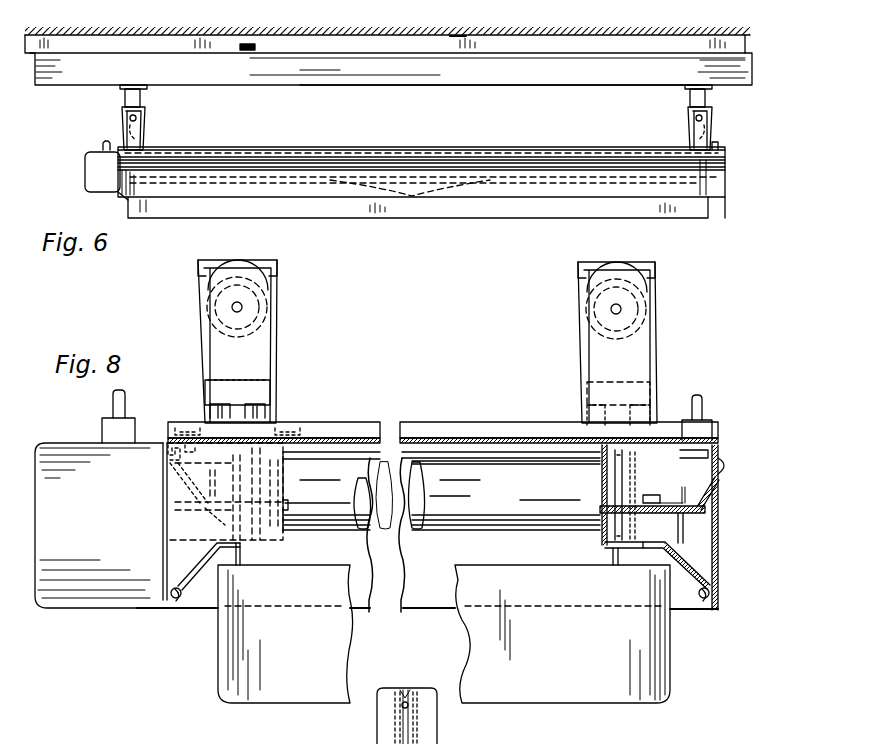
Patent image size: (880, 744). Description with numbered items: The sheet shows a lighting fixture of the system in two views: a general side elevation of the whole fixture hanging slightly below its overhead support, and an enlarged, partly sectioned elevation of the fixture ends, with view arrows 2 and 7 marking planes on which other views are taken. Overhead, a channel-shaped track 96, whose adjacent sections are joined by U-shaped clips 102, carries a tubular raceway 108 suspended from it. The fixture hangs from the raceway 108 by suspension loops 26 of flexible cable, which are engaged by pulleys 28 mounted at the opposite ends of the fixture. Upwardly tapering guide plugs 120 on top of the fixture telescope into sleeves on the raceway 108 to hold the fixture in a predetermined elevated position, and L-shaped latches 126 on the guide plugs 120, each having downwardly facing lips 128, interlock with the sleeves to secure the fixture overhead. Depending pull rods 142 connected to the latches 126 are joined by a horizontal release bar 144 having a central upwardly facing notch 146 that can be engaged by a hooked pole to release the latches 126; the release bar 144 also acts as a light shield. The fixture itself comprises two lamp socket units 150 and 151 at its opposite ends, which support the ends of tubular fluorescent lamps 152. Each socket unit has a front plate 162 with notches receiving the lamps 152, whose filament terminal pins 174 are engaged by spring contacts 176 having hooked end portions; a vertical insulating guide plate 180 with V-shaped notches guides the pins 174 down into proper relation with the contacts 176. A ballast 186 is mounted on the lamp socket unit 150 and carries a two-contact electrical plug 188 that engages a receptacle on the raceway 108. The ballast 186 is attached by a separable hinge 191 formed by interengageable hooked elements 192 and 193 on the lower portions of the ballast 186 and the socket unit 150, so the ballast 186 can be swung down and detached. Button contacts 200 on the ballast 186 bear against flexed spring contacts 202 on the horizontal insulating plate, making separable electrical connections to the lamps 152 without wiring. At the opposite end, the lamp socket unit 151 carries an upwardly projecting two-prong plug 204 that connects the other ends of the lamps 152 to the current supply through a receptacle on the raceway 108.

In FIG. 6, the section line 2- 2 is at (76, 13).
In FIG. 6, the section line 7- 7 is at (152, 103).
In FIG. 6, the suspension loops 26 is at (145, 100).
In FIG. 6, the pulleys 28 is at (146, 135).
In FIG. 8, the pulleys 28 is at (256, 336).
In FIG. 6, the track 96 is at (458, 36).
In FIG. 6, the U-shaped clips 102 is at (257, 46).
In FIG. 6, the tubular raceway 108 is at (533, 84).
In FIG. 6, the guide plugs 120 is at (122, 126).
In FIG. 8, the guide plugs 120 is at (278, 328).
In FIG. 8, the latches 126 is at (229, 390).
In FIG. 8, the lips 128 is at (207, 412).
In FIG. 8, the pull rods 142 is at (242, 555).
In FIG. 6, the release bars 144 is at (493, 210).
In FIG. 8, the release bars 144 is at (652, 660).
In FIG. 6, the notches 146 is at (414, 198).
In FIG. 6, the lamp socket unit 150 is at (118, 198).
In FIG. 8, the lamp socket unit 150 is at (150, 620).
In FIG. 6, the lamp socket unit 151 is at (730, 201).
In FIG. 8, the lamp socket unit 151 is at (721, 583).
In FIG. 6, the tubular fluorescent lamps 152 is at (352, 160).
In FIG. 8, the tubular fluorescent lamps 152 is at (512, 536).
In FIG. 8, the front plate 162 is at (290, 536).
In FIG. 8, the filament terminal pins 174 is at (648, 493).
In FIG. 8, the spring contacts 176 is at (677, 484).
In FIG. 8, the insulating guide plate 180 is at (636, 481).
In FIG. 6, the ballast 186 is at (88, 175).
In FIG. 8, the ballast 186 is at (70, 601).
In FIG. 6, the two-contact electrical plug 188 is at (102, 146).
In FIG. 8, the two-contact electrical plug 188 is at (104, 424).
In FIG. 8, the separable hinge 191 is at (190, 612).
In FIG. 8, the hooked element 192 is at (177, 600).
In FIG. 8, the hooked element 193 is at (178, 581).
In FIG. 8, the button contacts 200 is at (165, 523).
In FIG. 8, the spring contacts 202 is at (172, 546).
In FIG. 6, the two-prong plug 204 is at (720, 146).
In FIG. 8, the two-prong plug 204 is at (714, 409).